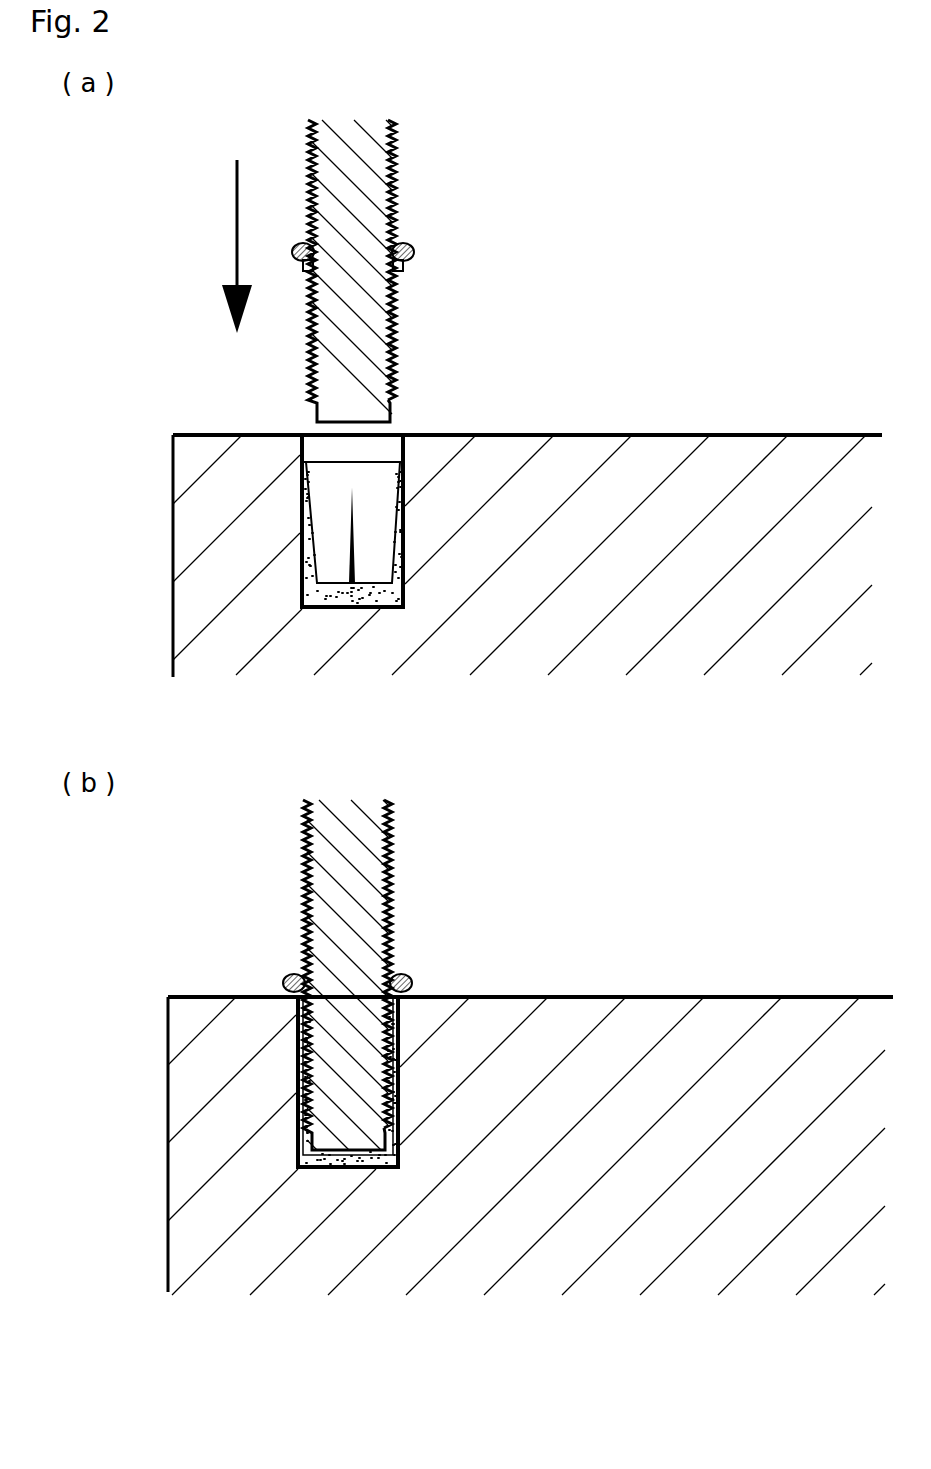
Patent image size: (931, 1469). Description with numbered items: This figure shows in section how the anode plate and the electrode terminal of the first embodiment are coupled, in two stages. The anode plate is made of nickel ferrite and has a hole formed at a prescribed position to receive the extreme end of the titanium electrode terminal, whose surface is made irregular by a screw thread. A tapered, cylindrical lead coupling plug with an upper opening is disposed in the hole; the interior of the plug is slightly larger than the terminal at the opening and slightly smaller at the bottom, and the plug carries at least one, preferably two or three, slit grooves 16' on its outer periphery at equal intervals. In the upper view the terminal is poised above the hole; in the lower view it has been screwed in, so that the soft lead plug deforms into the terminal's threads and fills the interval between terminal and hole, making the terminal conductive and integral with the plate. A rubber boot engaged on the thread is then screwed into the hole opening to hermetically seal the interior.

The slit groove 16' is at (416, 482).